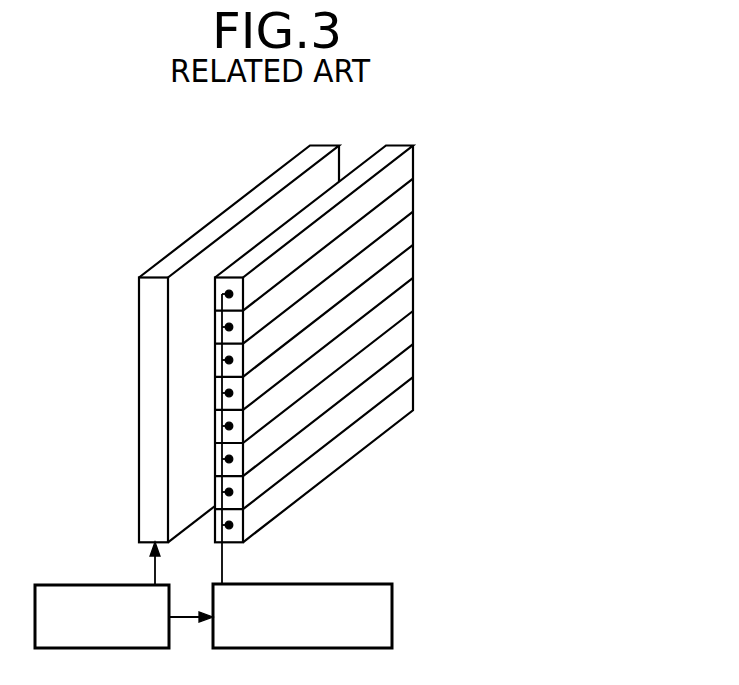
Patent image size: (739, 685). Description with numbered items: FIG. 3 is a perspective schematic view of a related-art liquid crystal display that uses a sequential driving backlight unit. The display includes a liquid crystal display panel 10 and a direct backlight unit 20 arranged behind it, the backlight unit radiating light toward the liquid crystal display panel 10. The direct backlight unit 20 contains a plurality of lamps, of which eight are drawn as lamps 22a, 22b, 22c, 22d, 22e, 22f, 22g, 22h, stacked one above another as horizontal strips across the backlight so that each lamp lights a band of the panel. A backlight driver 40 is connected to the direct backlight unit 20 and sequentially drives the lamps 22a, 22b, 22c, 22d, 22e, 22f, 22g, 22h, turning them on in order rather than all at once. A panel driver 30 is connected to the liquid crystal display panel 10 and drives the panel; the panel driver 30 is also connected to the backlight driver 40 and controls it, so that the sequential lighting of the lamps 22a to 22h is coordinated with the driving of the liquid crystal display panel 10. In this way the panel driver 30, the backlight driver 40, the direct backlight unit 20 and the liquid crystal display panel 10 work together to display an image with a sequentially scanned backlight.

The liquid crystal display panel 10 is at (324, 146).
The direct backlight unit 20 is at (398, 146).
The lamp 22a is at (413, 162).
The lamp 22b is at (413, 195).
The lamp 22c is at (413, 228).
The lamp 22d is at (413, 261).
The lamp 22e is at (413, 294).
The lamp 22f is at (413, 327).
The lamp 22g is at (413, 360).
The lamp 22h is at (413, 393).
The panel driver 30 is at (170, 649).
The backlight driver 40 is at (392, 613).